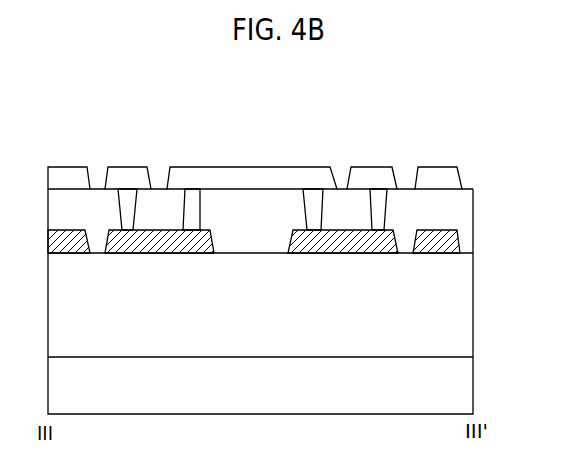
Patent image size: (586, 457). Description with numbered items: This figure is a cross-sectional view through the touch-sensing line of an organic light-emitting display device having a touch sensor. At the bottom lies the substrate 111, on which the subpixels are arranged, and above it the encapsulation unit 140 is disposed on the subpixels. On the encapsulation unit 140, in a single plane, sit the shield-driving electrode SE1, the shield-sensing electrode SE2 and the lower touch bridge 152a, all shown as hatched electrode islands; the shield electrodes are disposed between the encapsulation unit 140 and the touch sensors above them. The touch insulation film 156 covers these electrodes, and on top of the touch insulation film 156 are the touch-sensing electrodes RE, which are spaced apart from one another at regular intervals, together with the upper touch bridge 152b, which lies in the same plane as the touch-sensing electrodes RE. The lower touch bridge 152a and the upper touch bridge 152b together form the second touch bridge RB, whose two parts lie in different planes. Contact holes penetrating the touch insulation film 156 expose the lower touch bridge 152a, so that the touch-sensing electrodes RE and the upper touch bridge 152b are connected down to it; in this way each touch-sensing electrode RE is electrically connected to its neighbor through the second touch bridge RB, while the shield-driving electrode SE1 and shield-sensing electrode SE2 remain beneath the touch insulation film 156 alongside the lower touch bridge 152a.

The touch-sensing electrode RE is at (441, 166).
The second touch bridge RB is at (235, 122).
The lower touch bridge 152a is at (172, 226).
The upper touch bridge 152b is at (233, 165).
The shield-driving electrode SE1 is at (67, 255).
The shield-sensing electrode SE2 is at (436, 255).
The touch insulation film 156 is at (472, 213).
The encapsulation unit 140 is at (472, 316).
The substrate 111 is at (472, 384).